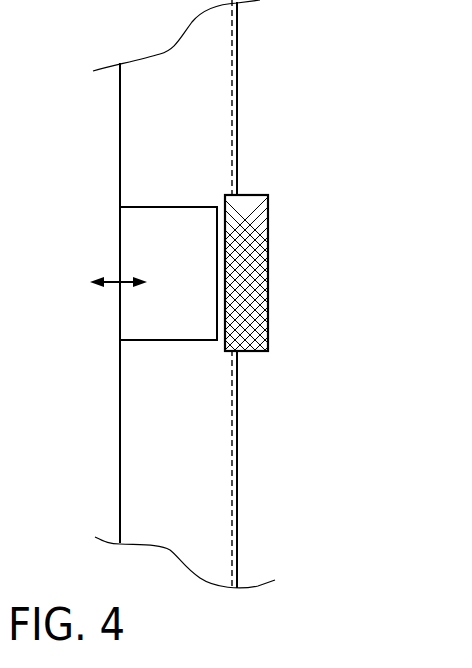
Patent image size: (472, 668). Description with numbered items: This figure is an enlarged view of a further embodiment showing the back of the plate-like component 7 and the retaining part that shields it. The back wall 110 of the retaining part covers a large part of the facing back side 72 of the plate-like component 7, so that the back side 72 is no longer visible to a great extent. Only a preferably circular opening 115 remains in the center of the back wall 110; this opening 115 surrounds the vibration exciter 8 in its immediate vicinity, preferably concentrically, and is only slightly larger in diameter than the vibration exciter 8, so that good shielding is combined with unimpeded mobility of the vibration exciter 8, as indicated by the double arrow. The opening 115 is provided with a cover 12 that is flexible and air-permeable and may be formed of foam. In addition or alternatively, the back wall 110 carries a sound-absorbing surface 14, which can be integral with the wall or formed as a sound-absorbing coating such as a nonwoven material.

The plate-like component 7 is at (120, 143).
The vibration exciter 8 is at (136, 229).
The cover 12 is at (259, 254).
The sound-absorbing surface 14 is at (232, 447).
The back side 72 is at (120, 463).
The back wall 110 is at (237, 100).
The opening 115 is at (250, 366).